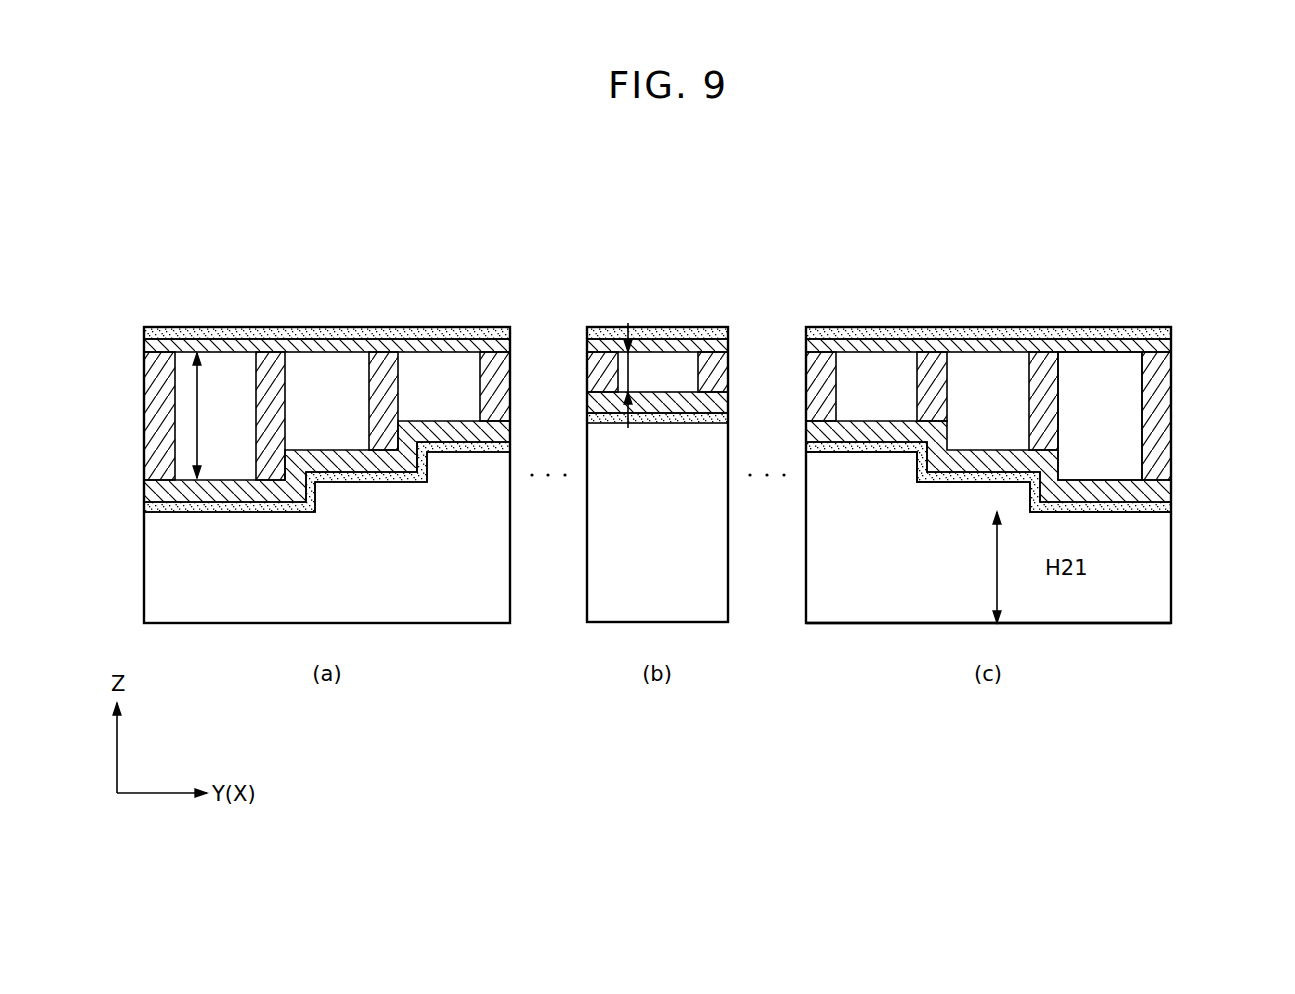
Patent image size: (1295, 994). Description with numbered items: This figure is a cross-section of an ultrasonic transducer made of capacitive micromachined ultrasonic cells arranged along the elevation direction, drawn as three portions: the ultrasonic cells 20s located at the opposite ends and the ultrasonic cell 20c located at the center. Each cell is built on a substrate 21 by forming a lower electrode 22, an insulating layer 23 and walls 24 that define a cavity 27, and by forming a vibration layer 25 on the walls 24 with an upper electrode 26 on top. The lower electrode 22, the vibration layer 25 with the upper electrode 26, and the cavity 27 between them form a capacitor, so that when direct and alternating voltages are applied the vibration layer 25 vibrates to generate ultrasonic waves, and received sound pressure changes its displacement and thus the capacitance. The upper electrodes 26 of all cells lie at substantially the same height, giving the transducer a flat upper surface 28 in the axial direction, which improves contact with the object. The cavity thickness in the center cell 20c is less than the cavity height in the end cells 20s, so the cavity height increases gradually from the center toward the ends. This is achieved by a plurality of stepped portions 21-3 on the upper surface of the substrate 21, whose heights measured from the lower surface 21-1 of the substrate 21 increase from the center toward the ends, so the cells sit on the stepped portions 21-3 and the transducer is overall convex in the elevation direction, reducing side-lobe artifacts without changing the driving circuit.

The ultrasonic cells located at opposite ends 20s is at (210, 325).
The ultrasonic cell located at the center 20c is at (660, 325).
The upper surface of the ultrasonic transducer 28 is at (969, 331).
The cavity 27 is at (1100, 372).
The upper electrode 26 is at (1172, 328).
The vibration layer 25 is at (1160, 345).
The walls 24 is at (1165, 418).
The insulating layer 23 is at (1165, 490).
The lower electrode 22 is at (1165, 509).
The stepped portions 21-3 is at (1130, 508).
The substrate 21 is at (1162, 596).
The lower surface of the substrate 21-1 is at (1068, 623).